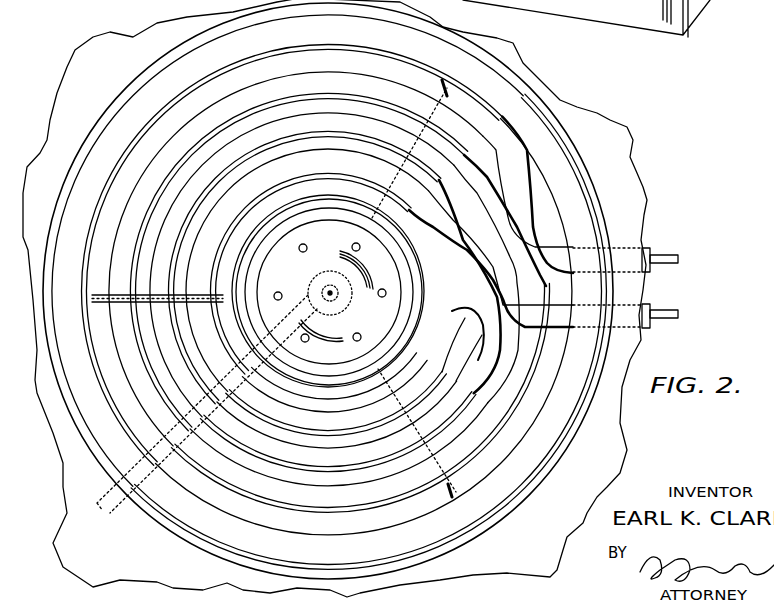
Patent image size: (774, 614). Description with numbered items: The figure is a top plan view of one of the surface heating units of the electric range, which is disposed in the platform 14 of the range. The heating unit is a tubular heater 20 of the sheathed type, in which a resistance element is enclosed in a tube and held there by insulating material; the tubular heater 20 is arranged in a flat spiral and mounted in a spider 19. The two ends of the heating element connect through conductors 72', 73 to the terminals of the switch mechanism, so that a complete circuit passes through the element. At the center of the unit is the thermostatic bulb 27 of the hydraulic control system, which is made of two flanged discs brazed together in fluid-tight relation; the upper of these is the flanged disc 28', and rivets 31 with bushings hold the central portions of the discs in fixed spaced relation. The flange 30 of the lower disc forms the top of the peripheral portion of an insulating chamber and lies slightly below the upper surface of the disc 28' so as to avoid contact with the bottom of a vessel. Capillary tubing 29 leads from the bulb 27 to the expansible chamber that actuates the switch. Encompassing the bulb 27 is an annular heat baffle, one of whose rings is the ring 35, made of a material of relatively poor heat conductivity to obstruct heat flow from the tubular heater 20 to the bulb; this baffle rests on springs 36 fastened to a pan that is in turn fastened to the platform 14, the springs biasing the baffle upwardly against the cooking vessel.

The platform 14 is at (110, 45).
The spider 19 is at (446, 84).
The tubular heater 20 is at (513, 184).
The thermostatic bulb 27 is at (382, 320).
The flanged disc 28' is at (437, 349).
The capillary tubing 29 is at (113, 513).
The flange 30 is at (393, 362).
The rivets 31 is at (289, 264).
The ring 35 is at (350, 180).
The springs 36 is at (285, 386).
The conductor 72' is at (639, 326).
The conductor 73 is at (665, 254).